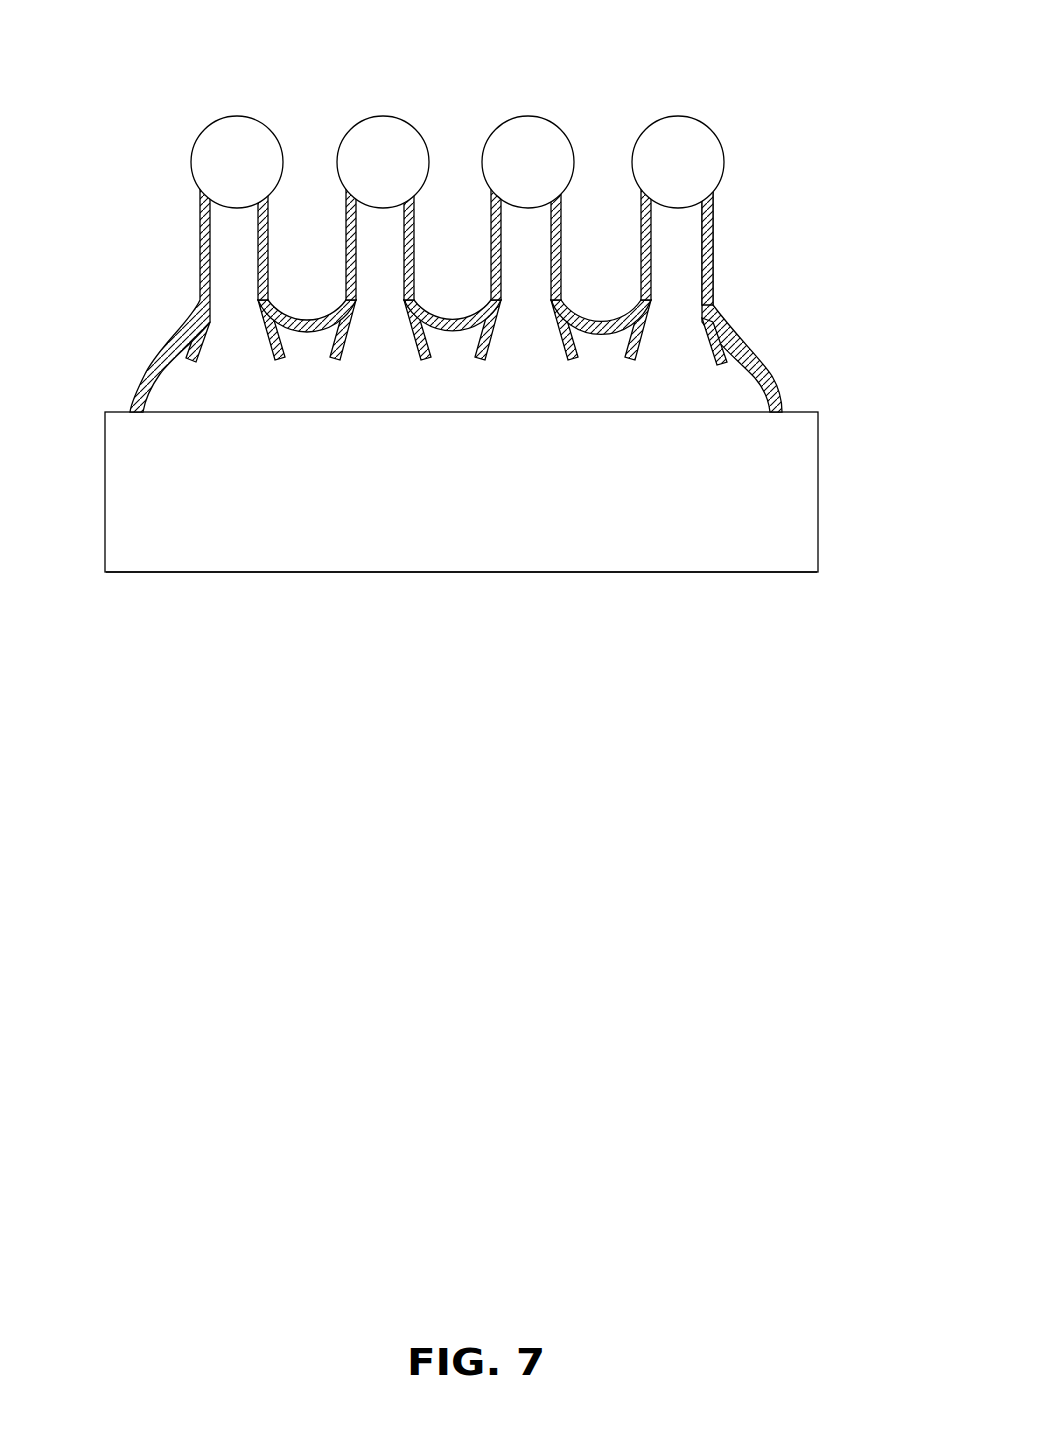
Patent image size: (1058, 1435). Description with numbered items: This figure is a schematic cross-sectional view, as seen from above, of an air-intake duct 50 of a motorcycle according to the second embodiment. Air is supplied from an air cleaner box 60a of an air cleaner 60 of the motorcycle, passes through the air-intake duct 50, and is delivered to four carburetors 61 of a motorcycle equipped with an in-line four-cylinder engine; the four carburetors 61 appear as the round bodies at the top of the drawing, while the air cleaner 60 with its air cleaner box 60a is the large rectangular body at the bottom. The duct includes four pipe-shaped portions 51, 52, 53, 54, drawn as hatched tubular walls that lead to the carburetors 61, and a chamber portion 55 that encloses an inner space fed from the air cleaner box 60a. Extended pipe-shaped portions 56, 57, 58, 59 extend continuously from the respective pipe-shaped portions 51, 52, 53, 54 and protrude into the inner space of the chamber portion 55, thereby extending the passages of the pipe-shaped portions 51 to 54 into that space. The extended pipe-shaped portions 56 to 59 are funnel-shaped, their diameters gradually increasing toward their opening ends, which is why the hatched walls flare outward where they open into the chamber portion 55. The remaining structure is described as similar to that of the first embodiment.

The air-intake duct 50 is at (148, 340).
The pipe-shaped portion 51 is at (268, 225).
The pipe-shaped portion 52 is at (414, 225).
The pipe-shaped portion 53 is at (563, 225).
The pipe-shaped portion 54 is at (713, 225).
The chamber portion 55 is at (777, 383).
The extended pipe-shaped portion 56 is at (272, 317).
The extended pipe-shaped portion 57 is at (438, 318).
The extended pipe-shaped portion 58 is at (587, 318).
The extended pipe-shaped portion 59 is at (732, 330).
The air cleaner 60 is at (262, 572).
The air cleaner box 60a is at (480, 547).
The carburetor 61 is at (232, 115).